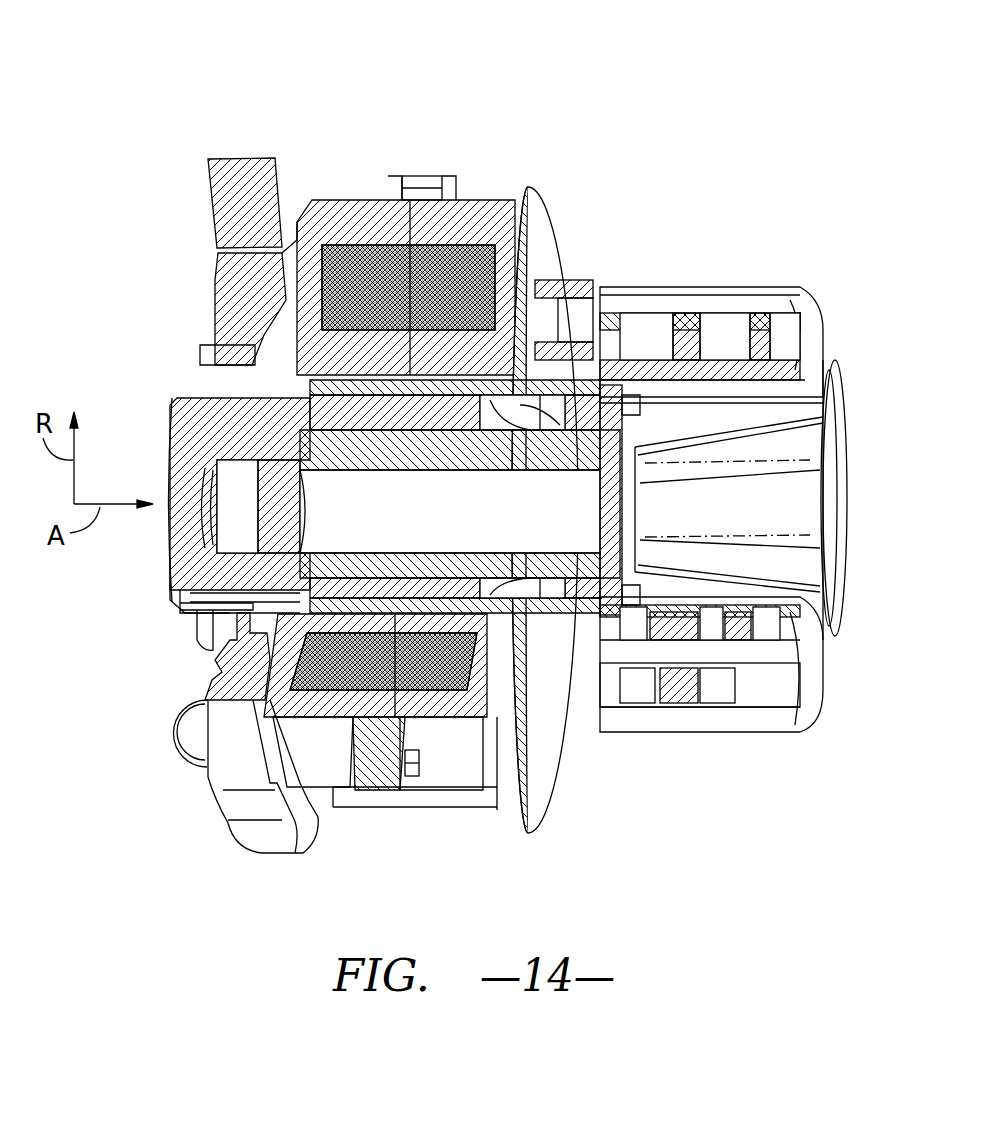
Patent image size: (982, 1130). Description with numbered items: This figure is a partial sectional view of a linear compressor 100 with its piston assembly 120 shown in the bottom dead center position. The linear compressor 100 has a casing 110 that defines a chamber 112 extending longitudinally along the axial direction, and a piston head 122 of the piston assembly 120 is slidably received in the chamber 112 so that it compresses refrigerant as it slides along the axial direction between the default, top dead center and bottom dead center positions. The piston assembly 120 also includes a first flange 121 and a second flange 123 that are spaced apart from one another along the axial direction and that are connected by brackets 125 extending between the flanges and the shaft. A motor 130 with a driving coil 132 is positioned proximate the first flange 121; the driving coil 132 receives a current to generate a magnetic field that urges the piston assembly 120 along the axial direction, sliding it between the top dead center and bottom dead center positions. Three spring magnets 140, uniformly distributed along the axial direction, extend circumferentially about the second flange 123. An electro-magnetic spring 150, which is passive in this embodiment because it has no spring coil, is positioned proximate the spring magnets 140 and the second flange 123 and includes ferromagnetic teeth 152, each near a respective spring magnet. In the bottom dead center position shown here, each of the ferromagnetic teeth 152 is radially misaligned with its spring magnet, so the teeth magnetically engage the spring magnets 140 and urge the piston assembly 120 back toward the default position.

The linear compressor 100 is at (231, 95).
The casing 110 is at (220, 437).
The chamber 112 is at (163, 538).
The piston assembly 120 is at (471, 524).
The first flange 121 is at (495, 372).
The piston head 122 is at (187, 487).
The second flange 123 is at (817, 443).
The brackets 125 is at (633, 417).
The motor 130 is at (475, 185).
The driving coil 132 is at (370, 267).
The spring magnets 140 is at (623, 373).
The electro-magnetic spring 150 is at (715, 206).
The ferromagnetic teeth 152 is at (610, 313).